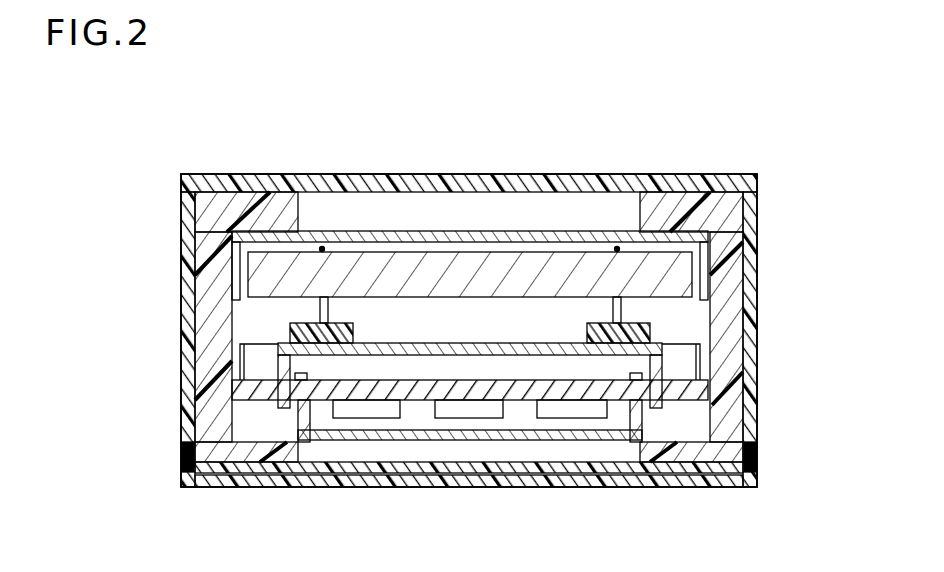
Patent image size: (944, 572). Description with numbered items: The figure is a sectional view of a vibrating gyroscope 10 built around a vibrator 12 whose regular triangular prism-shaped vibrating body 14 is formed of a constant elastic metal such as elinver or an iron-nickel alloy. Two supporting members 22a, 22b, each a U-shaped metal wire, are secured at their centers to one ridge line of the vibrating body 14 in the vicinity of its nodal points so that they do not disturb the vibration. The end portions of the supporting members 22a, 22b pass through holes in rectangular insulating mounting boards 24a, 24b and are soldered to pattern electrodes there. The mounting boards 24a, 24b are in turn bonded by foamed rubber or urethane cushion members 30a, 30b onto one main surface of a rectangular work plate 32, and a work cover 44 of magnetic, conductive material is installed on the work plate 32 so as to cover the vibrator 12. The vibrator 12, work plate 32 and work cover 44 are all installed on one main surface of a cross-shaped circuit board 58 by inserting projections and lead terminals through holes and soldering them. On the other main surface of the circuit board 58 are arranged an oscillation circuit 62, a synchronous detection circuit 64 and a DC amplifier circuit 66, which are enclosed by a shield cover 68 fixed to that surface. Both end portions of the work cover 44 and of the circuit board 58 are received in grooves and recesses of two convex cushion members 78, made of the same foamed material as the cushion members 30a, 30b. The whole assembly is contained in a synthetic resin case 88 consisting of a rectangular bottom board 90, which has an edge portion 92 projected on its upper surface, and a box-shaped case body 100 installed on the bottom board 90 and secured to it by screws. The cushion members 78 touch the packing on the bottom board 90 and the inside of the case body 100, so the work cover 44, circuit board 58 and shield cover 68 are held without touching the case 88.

The vibrating gyroscope 10 is at (761, 89).
The vibrator 12 is at (386, 248).
The vibrating body 14 is at (456, 268).
The supporting member 22a is at (320, 312).
The supporting member 22b is at (624, 308).
The mounting board 24a is at (292, 331).
The mounting board 24b is at (650, 333).
The cushion member 30a is at (282, 346).
The cushion member 30b is at (664, 348).
The work plate 32 is at (468, 342).
The work cover 44 is at (548, 233).
The circuit board 58 is at (250, 396).
The oscillation circuit 62 is at (381, 405).
The synchronous detection circuit 64 is at (485, 405).
The DC amplifier circuit 66 is at (582, 405).
The shield cover 68 is at (328, 437).
The cushion member 78 is at (304, 211).
The case 88 is at (181, 220).
The bottom board 90 is at (216, 478).
The edge portion 92 is at (187, 461).
The case body 100 is at (192, 254).